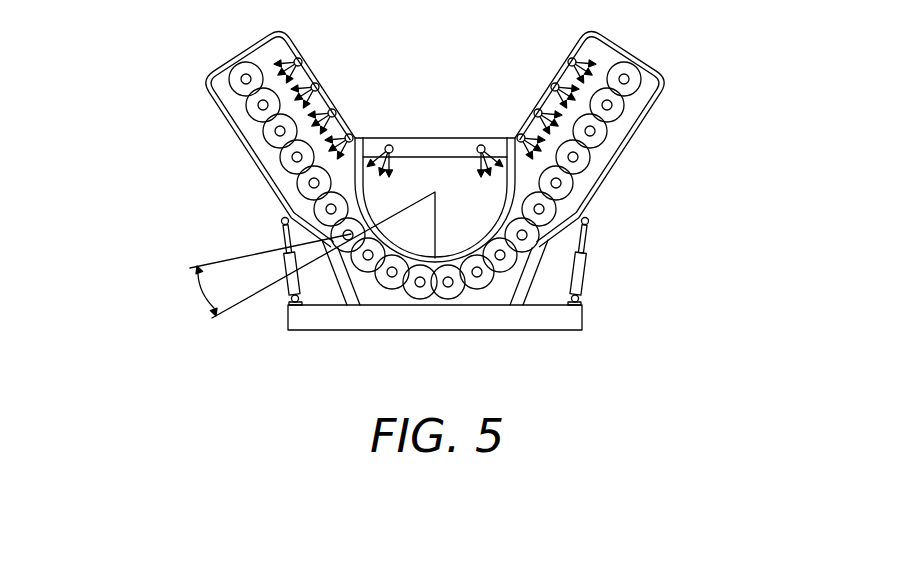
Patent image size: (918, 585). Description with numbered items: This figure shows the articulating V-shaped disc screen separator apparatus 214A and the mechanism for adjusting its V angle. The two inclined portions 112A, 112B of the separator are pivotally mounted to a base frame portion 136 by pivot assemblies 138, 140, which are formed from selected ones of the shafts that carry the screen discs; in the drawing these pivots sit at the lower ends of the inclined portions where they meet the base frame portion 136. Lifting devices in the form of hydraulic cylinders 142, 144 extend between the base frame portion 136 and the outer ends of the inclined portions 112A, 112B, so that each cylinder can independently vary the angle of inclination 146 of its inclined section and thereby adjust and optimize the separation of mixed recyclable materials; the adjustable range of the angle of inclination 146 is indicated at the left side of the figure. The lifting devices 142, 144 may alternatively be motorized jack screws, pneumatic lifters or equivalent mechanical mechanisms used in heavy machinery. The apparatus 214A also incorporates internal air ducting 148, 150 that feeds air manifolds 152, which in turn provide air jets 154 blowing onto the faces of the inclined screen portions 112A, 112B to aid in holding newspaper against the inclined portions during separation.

The inclined portion 112A is at (237, 139).
The inclined portion 112B is at (633, 139).
The base frame portion 136 is at (465, 318).
The pivot assembly 138 is at (348, 237).
The pivot assembly 140 is at (522, 237).
The hydraulic cylinder 142 is at (283, 260).
The hydraulic cylinder 144 is at (587, 260).
The angle of inclination 146 is at (203, 298).
The internal air ducting 148 is at (416, 146).
The internal air ducting 150 is at (302, 60).
The air manifold 152 is at (323, 130).
The air jet 154 is at (272, 62).
The separator apparatus 214A is at (697, 126).